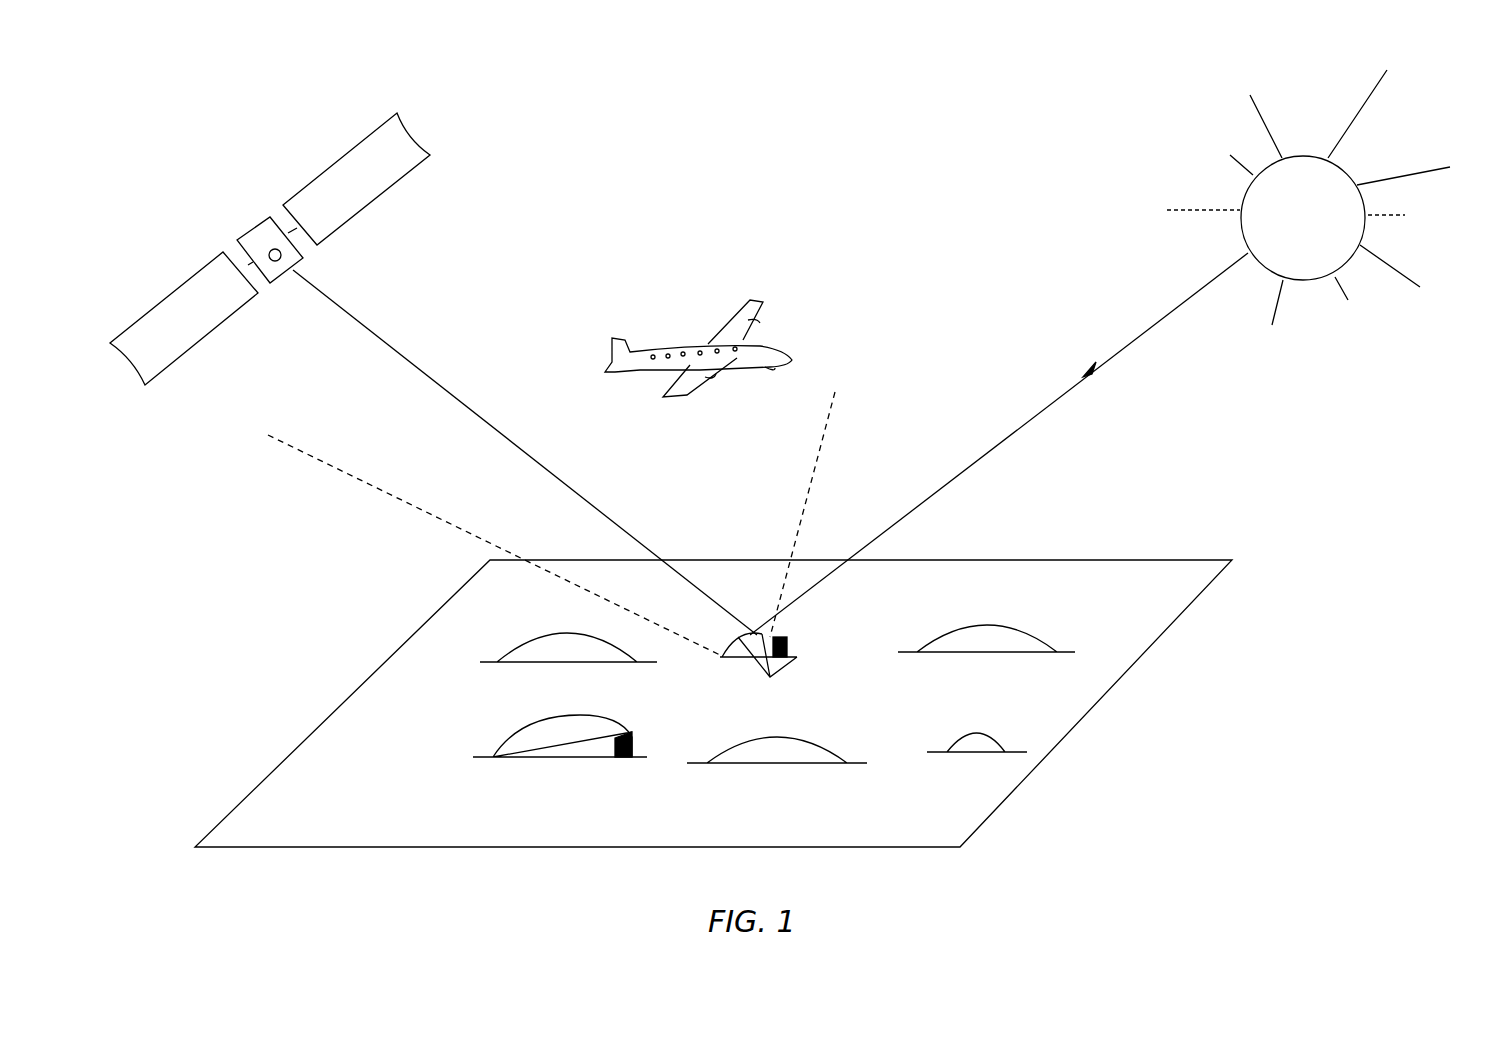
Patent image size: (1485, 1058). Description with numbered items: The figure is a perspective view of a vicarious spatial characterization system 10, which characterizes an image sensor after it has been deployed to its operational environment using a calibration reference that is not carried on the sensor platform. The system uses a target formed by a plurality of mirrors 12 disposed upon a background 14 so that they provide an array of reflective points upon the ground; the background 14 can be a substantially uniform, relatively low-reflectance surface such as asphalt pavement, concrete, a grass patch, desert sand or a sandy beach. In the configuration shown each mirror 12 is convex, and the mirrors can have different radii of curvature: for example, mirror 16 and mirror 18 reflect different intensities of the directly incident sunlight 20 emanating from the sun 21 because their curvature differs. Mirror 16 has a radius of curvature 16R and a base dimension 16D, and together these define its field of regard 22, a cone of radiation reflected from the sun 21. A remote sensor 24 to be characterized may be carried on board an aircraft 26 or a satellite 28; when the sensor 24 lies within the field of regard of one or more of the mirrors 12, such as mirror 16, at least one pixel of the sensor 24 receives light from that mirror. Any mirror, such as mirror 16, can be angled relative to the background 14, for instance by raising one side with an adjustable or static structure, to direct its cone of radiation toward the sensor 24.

The vicarious spatial characterization system 10 is at (1030, 208).
The mirrors 12 is at (1048, 632).
The background 14 is at (1072, 730).
The mirror 16 is at (737, 637).
The base dimension 16D is at (738, 660).
The radius of curvature 16R is at (787, 667).
The mirror 18 is at (505, 663).
The directly incident sunlight 20 is at (1038, 408).
The sun 21 is at (1302, 157).
The field of regard 22 is at (788, 493).
The remote sensor 24 is at (270, 247).
The aircraft 26 is at (668, 345).
The satellite 28 is at (343, 152).